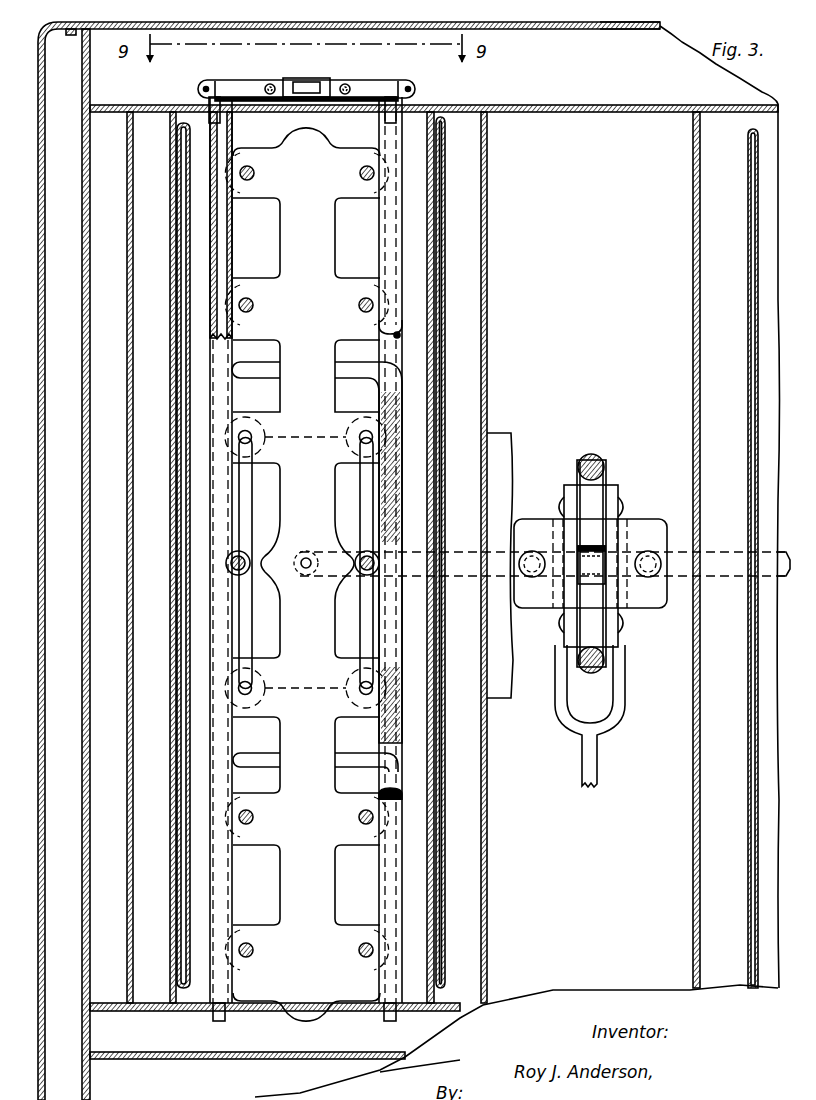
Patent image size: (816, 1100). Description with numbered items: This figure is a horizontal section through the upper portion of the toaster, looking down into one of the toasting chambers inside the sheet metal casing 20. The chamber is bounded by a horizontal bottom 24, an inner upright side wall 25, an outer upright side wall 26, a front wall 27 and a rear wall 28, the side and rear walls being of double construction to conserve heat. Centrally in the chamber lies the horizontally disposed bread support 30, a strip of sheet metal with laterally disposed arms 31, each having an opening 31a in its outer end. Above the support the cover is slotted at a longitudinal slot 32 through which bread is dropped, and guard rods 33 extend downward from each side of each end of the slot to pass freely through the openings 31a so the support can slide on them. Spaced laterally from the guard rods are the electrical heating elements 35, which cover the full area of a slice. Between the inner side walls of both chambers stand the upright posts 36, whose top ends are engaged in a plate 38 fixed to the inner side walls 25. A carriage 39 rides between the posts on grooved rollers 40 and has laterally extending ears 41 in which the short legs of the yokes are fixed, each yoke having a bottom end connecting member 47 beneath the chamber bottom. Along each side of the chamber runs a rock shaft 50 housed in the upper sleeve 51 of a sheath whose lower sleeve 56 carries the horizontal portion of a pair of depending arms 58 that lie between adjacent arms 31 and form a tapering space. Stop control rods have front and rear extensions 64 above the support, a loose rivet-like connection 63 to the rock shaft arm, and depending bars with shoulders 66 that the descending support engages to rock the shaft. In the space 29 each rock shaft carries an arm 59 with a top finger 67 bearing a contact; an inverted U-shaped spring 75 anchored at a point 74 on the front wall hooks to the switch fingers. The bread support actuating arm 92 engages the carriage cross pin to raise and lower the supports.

The sheet metal casing 20 is at (56, 22).
The horizontal bottom 24 is at (626, 184).
The inner upright side wall 25 is at (488, 268).
The outer upright side wall 26 is at (127, 402).
The front wall 27 is at (552, 105).
The rear wall 28 is at (152, 1060).
The space 29 is at (641, 48).
The bread support 30 is at (280, 232).
The arm 31 is at (340, 262).
The opening 31a is at (253, 305).
The longitudinal slot 32 is at (366, 130).
The guard rod 33 is at (396, 318).
The electrical heating element 35 is at (178, 386).
The upright post 36 is at (604, 467).
The plate 38 is at (508, 698).
The carriage 39 is at (632, 628).
The grooved roller 40 is at (598, 490).
The ear 41 is at (532, 519).
The bottom end connecting member 47 is at (460, 578).
The rock shaft 50 is at (206, 100).
The upper sleeve 51 is at (392, 505).
The lower sleeve 56 is at (428, 368).
The arm 58 is at (274, 372).
The arm 59 is at (250, 84).
The rivet-like connection 63 is at (250, 564).
The extension 64 is at (247, 492).
The shoulder 66 is at (305, 562).
The top finger 67 is at (262, 82).
The anchor point 74 is at (330, 84).
The spring 75 is at (312, 84).
The bread support actuating arm 92 is at (598, 770).